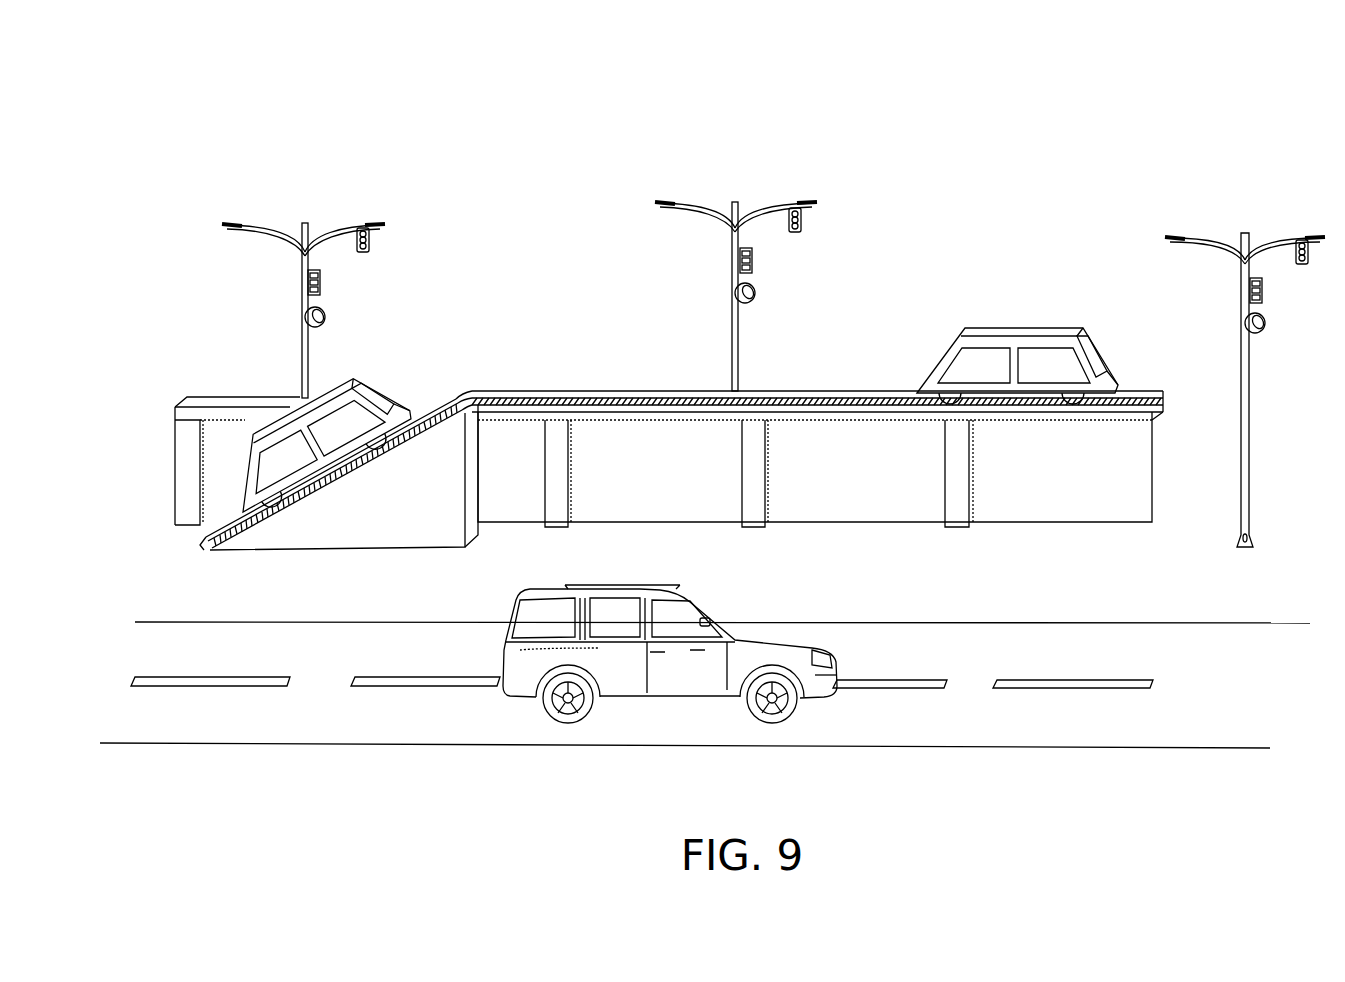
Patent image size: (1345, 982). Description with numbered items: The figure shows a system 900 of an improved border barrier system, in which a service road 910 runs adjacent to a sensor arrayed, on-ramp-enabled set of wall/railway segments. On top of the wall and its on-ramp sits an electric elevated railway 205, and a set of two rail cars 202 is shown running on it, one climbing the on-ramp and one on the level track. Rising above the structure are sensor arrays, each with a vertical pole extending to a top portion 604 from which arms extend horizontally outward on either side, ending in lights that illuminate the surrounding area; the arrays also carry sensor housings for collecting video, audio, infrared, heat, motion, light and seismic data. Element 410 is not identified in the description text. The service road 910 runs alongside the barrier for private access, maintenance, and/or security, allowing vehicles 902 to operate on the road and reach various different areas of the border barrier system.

The system 900 is at (286, 118).
The top portion 604 is at (371, 203).
The rail cars 202 is at (366, 373).
The elevated railway 205 is at (645, 390).
The elevated structure wall and ramp 410 is at (1131, 520).
The vehicles 902 is at (701, 604).
The service road 910 is at (1027, 634).